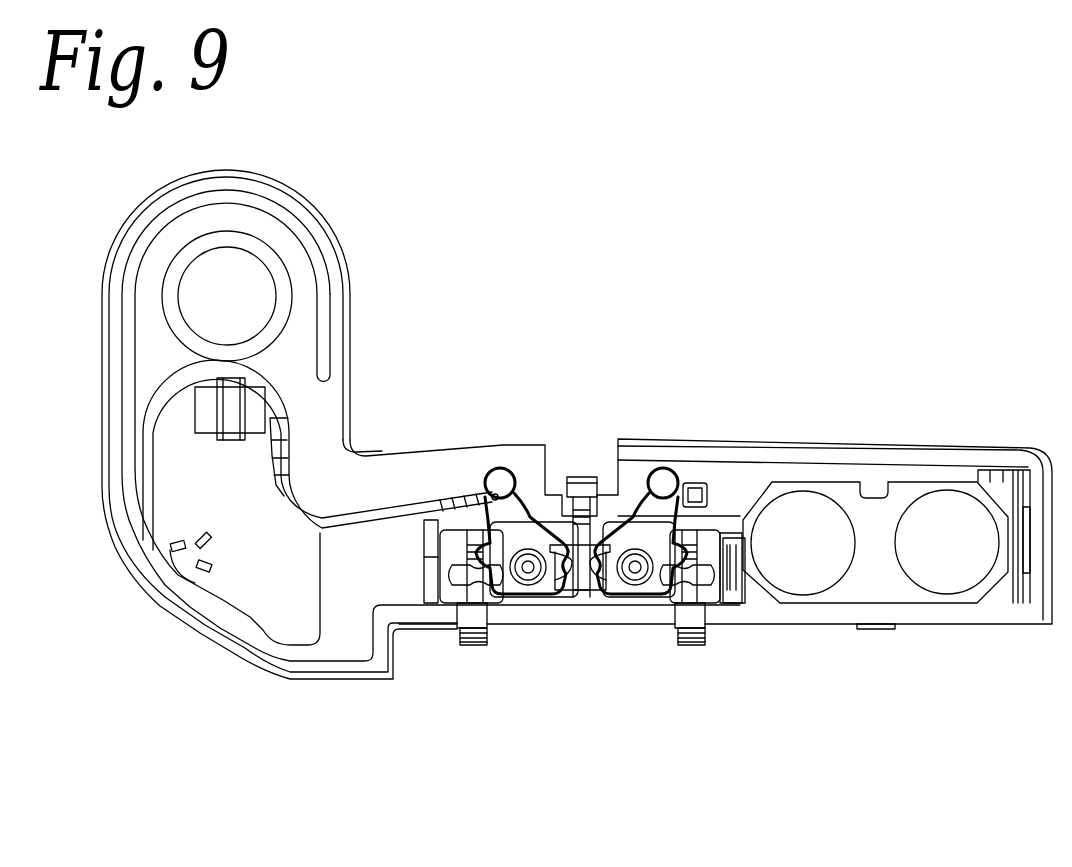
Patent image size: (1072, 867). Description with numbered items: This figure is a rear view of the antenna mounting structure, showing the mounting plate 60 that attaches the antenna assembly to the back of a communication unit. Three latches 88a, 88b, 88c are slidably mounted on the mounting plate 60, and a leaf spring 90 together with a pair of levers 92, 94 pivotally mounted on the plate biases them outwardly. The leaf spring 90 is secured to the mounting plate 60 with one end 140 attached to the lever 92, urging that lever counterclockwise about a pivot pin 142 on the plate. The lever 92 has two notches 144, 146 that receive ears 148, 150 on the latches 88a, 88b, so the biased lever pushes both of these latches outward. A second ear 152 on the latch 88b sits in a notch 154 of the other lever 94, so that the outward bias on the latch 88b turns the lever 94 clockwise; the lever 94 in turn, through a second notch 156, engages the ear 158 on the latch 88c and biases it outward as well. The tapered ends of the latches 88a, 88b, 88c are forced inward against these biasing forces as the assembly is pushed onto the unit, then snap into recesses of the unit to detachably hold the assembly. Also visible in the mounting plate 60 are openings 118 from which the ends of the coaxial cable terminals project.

The mounting plate 60 is at (275, 598).
The leaf spring 90 is at (292, 408).
The lever 92 is at (503, 458).
The lever 94 is at (674, 460).
The end of leaf spring 140 is at (507, 493).
The latch 88a is at (462, 652).
The latch 88b is at (583, 470).
The latch 88c is at (701, 651).
The pivot pin 142 is at (528, 572).
The notch 144 is at (485, 630).
The notch 146 is at (557, 575).
The ear 148 is at (488, 572).
The ear 150 is at (572, 575).
The second ear 152 is at (590, 572).
The notch 154 is at (618, 572).
The second notch 156 is at (660, 590).
The ear 158 is at (707, 603).
The openings 118 is at (820, 580).